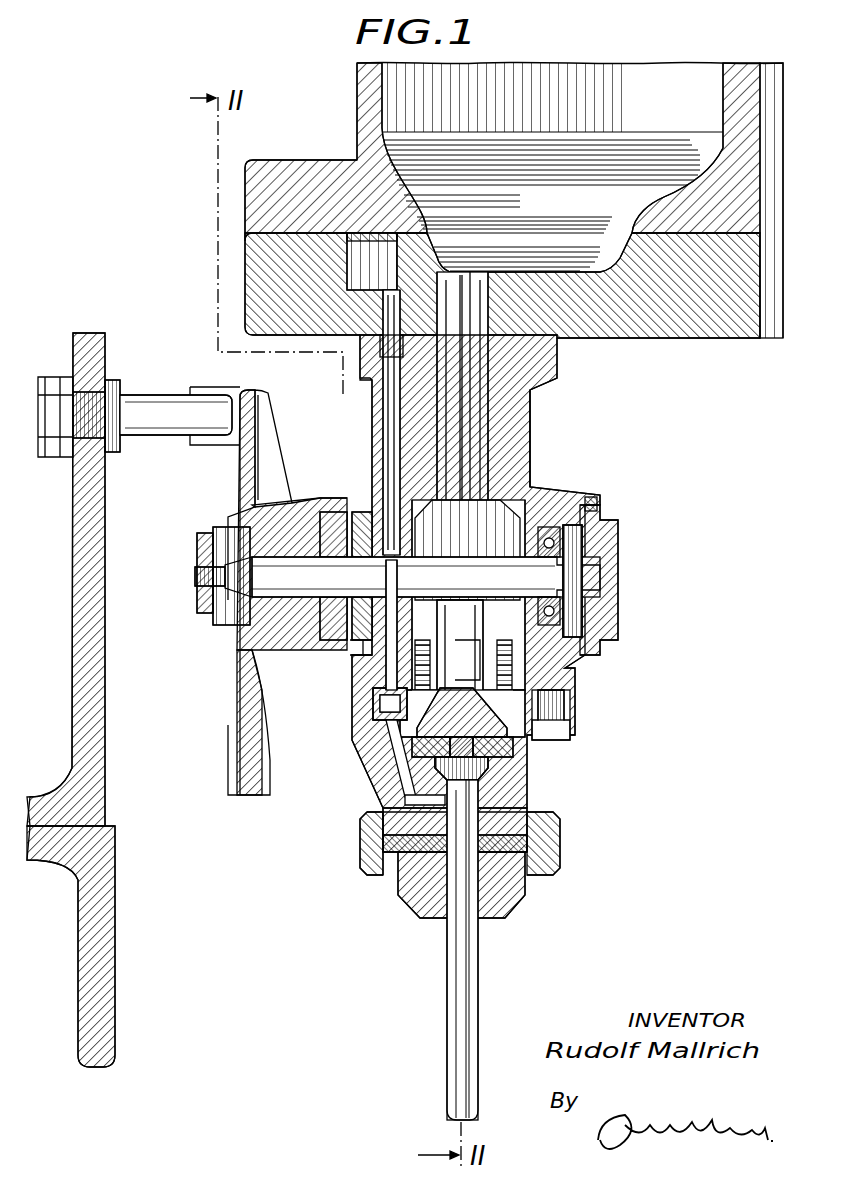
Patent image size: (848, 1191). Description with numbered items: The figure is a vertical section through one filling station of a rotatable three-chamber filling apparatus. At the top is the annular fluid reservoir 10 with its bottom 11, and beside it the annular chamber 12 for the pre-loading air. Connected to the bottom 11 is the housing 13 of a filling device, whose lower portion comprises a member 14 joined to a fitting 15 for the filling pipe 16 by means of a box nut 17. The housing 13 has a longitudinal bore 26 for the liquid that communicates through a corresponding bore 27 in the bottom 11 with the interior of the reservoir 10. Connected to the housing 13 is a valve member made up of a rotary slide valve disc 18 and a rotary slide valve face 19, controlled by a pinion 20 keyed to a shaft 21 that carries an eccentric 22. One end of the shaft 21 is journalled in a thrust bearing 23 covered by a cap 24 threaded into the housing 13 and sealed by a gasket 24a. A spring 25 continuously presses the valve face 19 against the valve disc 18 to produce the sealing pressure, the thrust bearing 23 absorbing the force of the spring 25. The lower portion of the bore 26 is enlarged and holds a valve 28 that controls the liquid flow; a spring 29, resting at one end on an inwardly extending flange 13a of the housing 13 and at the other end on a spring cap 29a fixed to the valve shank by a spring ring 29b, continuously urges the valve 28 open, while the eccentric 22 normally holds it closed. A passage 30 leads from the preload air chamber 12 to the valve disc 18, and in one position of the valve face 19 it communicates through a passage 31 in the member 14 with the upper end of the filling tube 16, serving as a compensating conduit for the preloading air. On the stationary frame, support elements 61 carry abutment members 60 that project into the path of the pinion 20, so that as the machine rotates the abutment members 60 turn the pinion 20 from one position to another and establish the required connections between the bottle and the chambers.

The annular fluid reservoir 10 is at (385, 95).
The bottom 11 is at (256, 262).
The annular chamber for the pre-loading air 12 is at (365, 277).
The housing 13 is at (512, 455).
The inwardly extending flange 13a is at (572, 712).
The member 14 is at (512, 772).
The fitting 15 is at (410, 903).
The filling pipe 16 is at (475, 950).
The box nut 17 is at (563, 837).
The rotary slide valve disc 18 is at (358, 512).
The rotary slide valve face 19 is at (330, 512).
The pinion 20 is at (237, 748).
The shaft 21 is at (292, 597).
The eccentric 22 is at (462, 570).
The thrust bearing 23 is at (598, 622).
The cap 24 is at (615, 555).
The seal 24a is at (590, 503).
The spring 25 is at (213, 625).
The longitudinal bore 26 is at (528, 406).
The bore 27 is at (490, 293).
The valve 28 is at (432, 735).
The spring 29 is at (572, 670).
The spring cap 29a is at (373, 695).
The spring ring 29b is at (512, 665).
The passage 30 is at (385, 418).
The passage 31 is at (385, 666).
The abutment member 60 is at (158, 400).
The stationary support element 61 is at (103, 655).